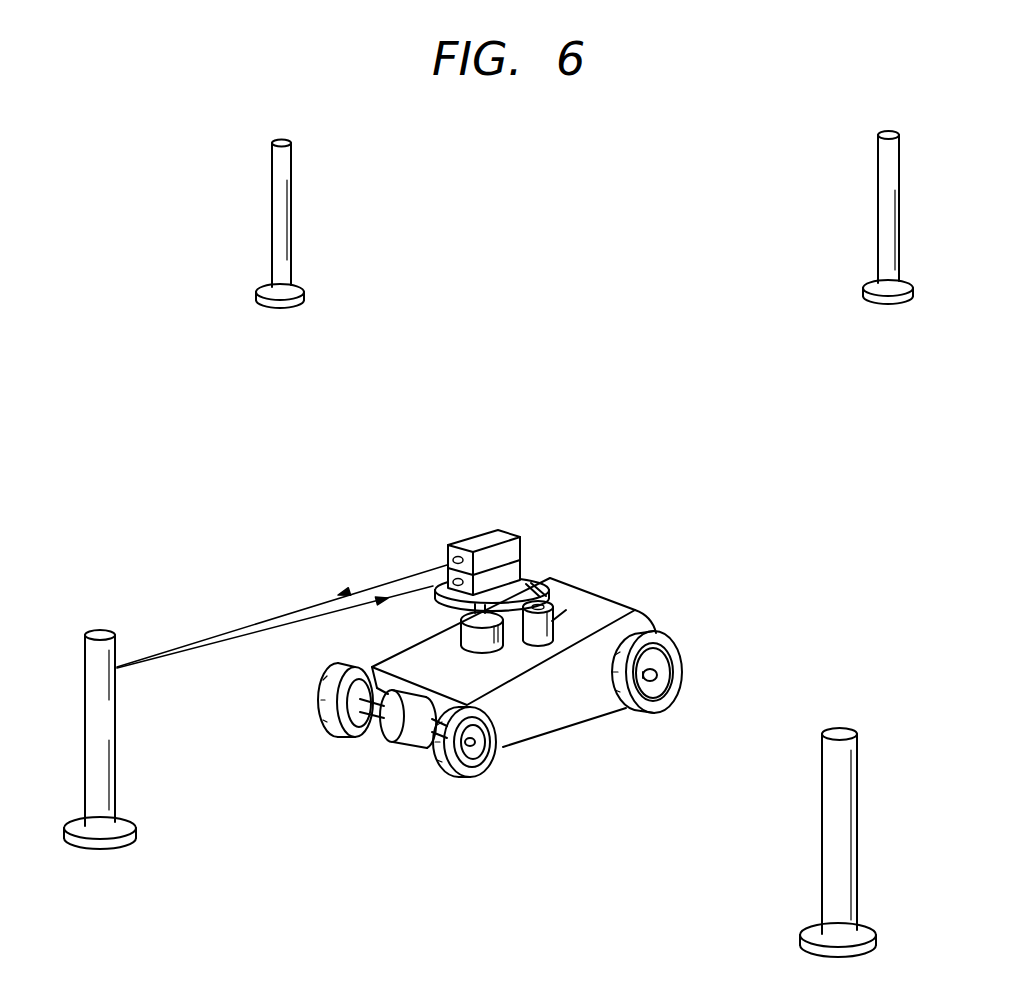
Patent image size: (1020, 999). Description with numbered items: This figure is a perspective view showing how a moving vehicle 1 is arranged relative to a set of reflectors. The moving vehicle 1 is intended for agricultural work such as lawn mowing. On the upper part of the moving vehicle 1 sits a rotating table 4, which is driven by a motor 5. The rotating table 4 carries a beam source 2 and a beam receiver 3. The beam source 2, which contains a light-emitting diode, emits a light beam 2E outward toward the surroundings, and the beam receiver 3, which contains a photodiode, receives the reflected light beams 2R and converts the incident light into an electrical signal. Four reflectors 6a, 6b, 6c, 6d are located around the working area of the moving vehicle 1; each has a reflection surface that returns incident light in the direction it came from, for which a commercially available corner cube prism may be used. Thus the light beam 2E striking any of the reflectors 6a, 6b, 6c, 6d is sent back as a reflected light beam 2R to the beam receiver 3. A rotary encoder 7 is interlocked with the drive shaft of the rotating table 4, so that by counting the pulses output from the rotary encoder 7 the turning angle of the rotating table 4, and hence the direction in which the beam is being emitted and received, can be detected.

The moving vehicle 1 is at (565, 718).
The beam source 2 is at (474, 536).
The light beam 2E is at (260, 622).
The reflected light beams 2R is at (248, 637).
The beam receiver 3 is at (513, 573).
The rotating table 4 is at (530, 584).
The motor 5 is at (566, 610).
The rotary encoder 7 is at (460, 632).
The reflector 6a is at (291, 190).
The reflector 6b is at (115, 760).
The reflector 6c is at (822, 795).
The reflector 6d is at (878, 231).